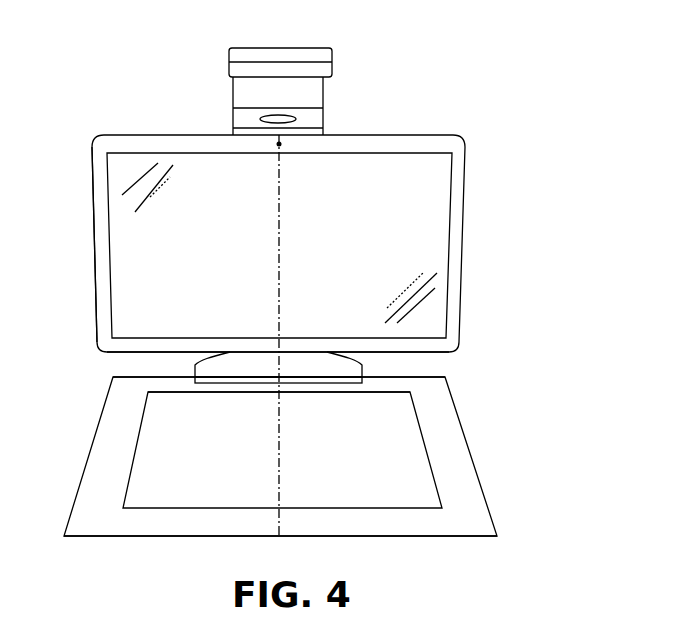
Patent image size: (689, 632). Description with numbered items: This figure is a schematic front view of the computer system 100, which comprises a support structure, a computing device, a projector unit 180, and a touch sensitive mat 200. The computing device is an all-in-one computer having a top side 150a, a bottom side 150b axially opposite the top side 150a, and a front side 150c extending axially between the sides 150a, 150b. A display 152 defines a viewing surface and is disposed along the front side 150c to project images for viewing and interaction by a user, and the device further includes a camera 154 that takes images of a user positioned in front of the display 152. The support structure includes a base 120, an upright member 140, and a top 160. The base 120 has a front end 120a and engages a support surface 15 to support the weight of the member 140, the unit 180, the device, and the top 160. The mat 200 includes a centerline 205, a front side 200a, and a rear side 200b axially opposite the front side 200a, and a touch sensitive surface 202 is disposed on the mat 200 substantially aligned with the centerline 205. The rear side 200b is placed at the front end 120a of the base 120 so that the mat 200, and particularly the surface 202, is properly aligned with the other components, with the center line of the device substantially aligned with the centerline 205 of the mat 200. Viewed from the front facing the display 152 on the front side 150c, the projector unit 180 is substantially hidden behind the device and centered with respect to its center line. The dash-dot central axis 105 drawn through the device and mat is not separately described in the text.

The support surface 15 is at (636, 465).
The computer system 100 is at (530, 200).
The central axis 105 is at (279, 180).
The base 120 is at (182, 370).
The front end 120a is at (239, 397).
The upright member 140 is at (222, 89).
The top side 150a is at (381, 137).
The bottom side 150b is at (400, 353).
The front side 150c is at (105, 250).
The display 152 is at (362, 208).
The camera 154 is at (281, 144).
The top 160 is at (344, 41).
The projector unit 180 is at (224, 127).
The touch sensitive mat 200 is at (448, 487).
The front side 200a is at (400, 536).
The rear side 200b is at (113, 377).
The touch sensitive surface 202 is at (412, 437).
The centerline 205 is at (282, 405).